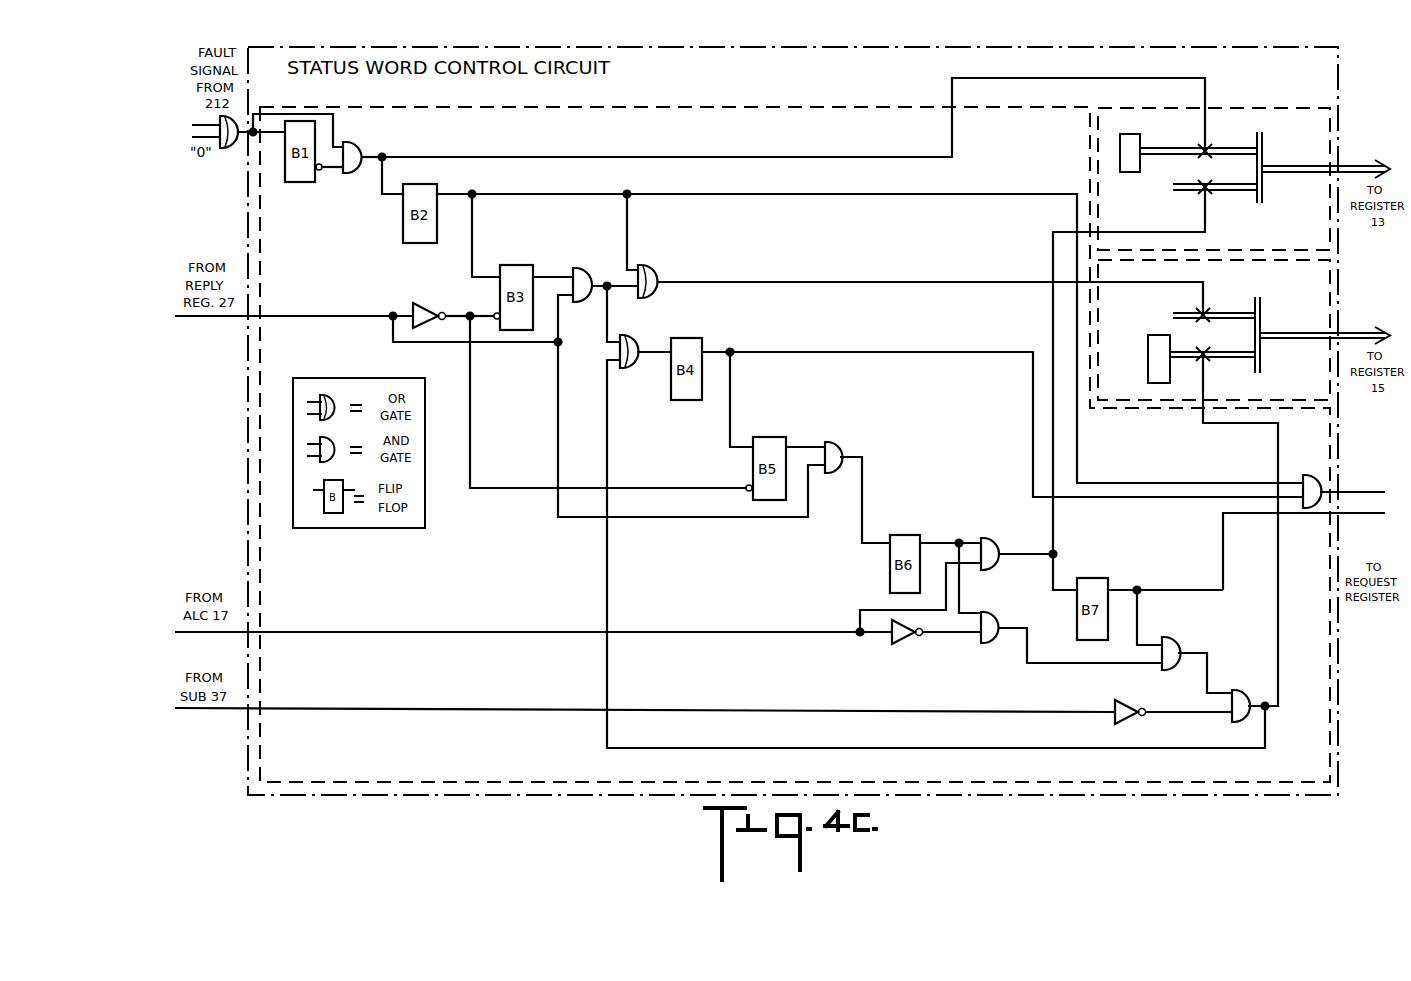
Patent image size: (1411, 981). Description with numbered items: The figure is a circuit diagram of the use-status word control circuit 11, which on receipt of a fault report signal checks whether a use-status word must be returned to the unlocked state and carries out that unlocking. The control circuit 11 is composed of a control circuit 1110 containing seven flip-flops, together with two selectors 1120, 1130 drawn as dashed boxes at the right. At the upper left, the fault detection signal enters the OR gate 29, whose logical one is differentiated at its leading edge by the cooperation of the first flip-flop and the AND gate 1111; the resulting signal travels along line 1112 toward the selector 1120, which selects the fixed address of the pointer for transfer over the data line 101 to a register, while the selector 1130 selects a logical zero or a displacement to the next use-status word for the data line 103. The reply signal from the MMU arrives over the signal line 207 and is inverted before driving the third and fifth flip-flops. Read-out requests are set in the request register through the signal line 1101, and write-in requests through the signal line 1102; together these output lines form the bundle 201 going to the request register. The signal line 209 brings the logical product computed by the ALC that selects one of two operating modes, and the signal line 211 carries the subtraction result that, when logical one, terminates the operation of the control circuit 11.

The use-status word control circuit 11 is at (1338, 70).
The OR gate 29 is at (228, 149).
The data line 101 is at (1364, 166).
The data line 103 is at (1364, 334).
The output lines to request register 201 is at (1362, 484).
The signal line 207 is at (312, 318).
The signal line 209 is at (363, 629).
The signal line 211 is at (360, 712).
The signal line 1101 is at (1347, 490).
The signal line 1102 is at (1304, 551).
The control circuit 1110 is at (708, 95).
The AND gate 1111 is at (370, 147).
The line from AND gate 1111 1112 is at (545, 161).
The selector 1120 is at (1284, 109).
The selector 1130 is at (1330, 273).